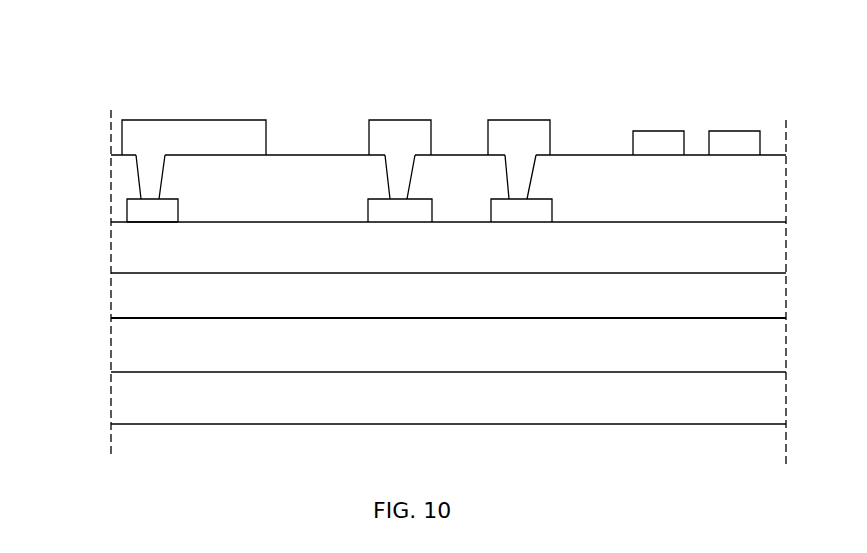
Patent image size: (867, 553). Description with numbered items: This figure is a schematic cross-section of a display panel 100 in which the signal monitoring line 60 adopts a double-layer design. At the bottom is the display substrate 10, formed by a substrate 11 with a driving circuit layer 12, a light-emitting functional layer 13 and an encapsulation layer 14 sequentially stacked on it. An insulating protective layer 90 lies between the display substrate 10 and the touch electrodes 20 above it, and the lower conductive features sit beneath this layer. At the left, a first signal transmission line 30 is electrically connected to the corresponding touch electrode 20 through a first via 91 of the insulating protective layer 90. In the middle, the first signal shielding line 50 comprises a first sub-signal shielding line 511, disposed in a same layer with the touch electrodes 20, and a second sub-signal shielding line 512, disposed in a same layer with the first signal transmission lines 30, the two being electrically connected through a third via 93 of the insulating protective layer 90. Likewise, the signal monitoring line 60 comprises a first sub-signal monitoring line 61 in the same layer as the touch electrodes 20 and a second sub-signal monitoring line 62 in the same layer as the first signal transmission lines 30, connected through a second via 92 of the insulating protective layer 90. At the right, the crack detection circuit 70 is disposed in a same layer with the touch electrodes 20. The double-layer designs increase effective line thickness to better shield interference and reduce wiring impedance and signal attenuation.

The display panel 100 is at (231, 36).
The display substrate 10 is at (397, 322).
The substrate 11 is at (415, 396).
The driving circuit layer 12 is at (183, 350).
The light-emitting functional layer 13 is at (185, 298).
The encapsulation layer 14 is at (183, 252).
The touch electrode 20 is at (178, 140).
The first signal transmission line 30 is at (162, 215).
The first signal shielding line 50 is at (362, 124).
The first sub-signal shielding line 511 is at (382, 132).
The second sub-signal shielding line 512 is at (370, 210).
The signal monitoring line 60 is at (578, 124).
The first sub-signal monitoring line 61 is at (537, 137).
The second sub-signal monitoring line 62 is at (537, 215).
The crack detection circuit 70 is at (665, 147).
The insulating protective layer 90 is at (127, 194).
The first via 91 is at (152, 183).
The second via 92 is at (519, 183).
The third via 93 is at (400, 183).